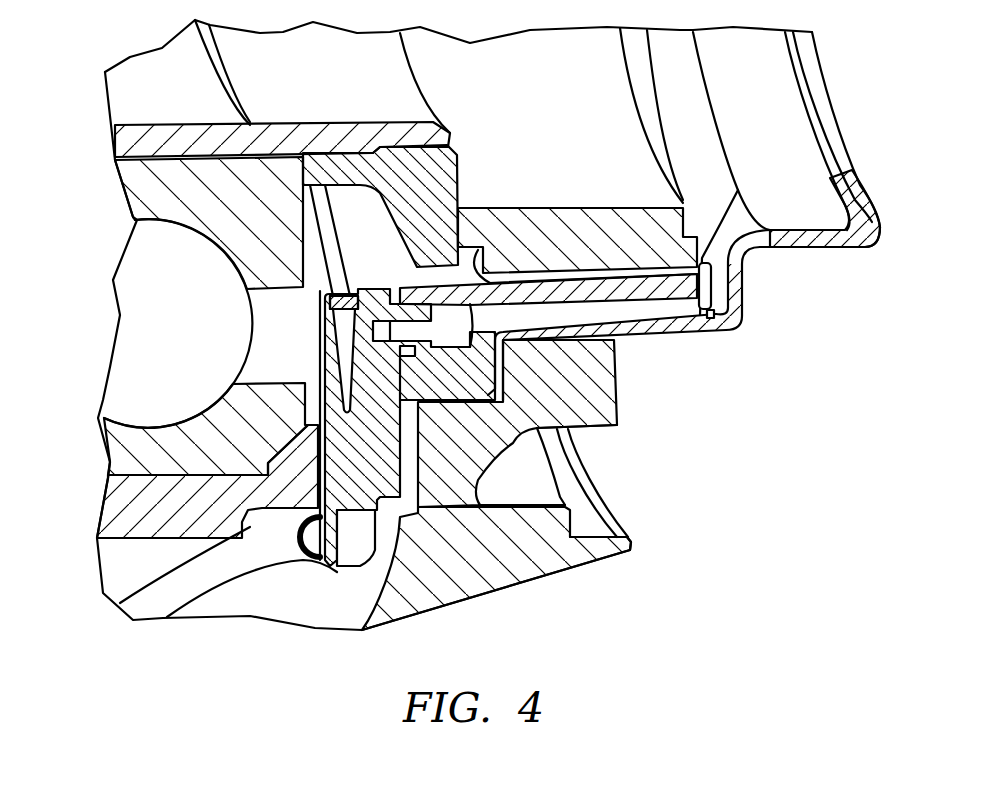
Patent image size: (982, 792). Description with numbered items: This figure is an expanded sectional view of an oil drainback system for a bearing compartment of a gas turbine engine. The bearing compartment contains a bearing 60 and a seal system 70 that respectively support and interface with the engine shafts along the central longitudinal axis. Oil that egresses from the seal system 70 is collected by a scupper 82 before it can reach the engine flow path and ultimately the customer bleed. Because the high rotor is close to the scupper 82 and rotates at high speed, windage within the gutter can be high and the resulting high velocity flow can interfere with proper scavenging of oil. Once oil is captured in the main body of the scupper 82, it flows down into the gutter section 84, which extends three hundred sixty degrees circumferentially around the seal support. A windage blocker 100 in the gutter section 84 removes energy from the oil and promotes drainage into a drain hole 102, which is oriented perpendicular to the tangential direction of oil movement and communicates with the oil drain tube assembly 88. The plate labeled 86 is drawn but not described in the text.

The bearing 60 is at (151, 281).
The seal system 70 is at (513, 223).
The scupper 82 is at (820, 240).
The gutter section 84 is at (710, 243).
The seal plate 86 is at (648, 308).
The oil drain tube assembly 88 is at (356, 545).
The windage blocker 100 is at (707, 287).
The drain hole 102 is at (712, 328).